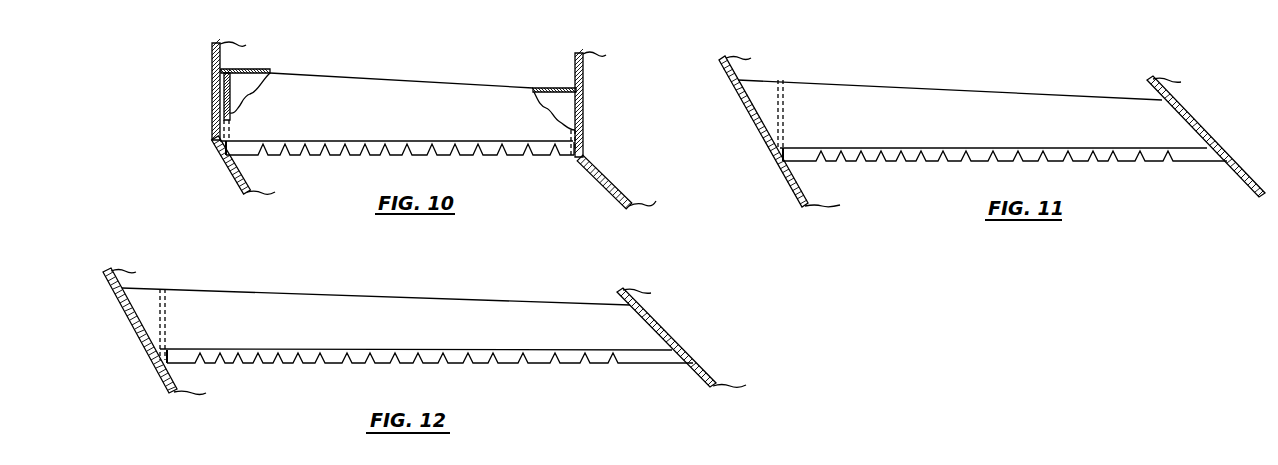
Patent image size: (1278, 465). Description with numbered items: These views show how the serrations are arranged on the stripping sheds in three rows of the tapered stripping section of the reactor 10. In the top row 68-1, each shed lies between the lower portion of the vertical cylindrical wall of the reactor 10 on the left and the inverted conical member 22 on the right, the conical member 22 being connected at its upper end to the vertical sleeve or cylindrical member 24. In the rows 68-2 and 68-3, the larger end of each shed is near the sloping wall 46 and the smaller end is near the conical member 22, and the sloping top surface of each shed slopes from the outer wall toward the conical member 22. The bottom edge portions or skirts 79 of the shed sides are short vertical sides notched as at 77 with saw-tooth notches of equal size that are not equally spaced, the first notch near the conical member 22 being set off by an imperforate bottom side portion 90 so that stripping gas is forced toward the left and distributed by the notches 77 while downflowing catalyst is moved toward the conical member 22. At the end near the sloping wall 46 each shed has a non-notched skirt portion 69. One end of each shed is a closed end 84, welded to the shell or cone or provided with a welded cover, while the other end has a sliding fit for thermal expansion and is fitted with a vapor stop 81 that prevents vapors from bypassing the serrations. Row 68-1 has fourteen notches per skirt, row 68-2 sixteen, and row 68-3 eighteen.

In FIG. 10, the reactor 10 is at (213, 100).
In FIG. 10, the inverted conical member 22 is at (610, 185).
In FIG. 11, the inverted conical member 22 is at (1200, 127).
In FIG. 12, the inverted conical member 22 is at (675, 341).
In FIG. 10, the sleeve or cylindrical member 24 is at (583, 115).
In FIG. 10, the sloping wall 46 is at (229, 168).
In FIG. 11, the sloping wall 46 is at (752, 125).
In FIG. 12, the sloping wall 46 is at (143, 338).
In FIG. 10, the top row of sheds 68-1 is at (465, 93).
In FIG. 11, the row of sheds 68-2 is at (993, 98).
In FIG. 12, the row of sheds 68-3 is at (372, 310).
In FIG. 10, the non-notched side portion 69 is at (245, 148).
In FIG. 11, the non-notched side portion 69 is at (805, 156).
In FIG. 12, the non-notched side portion 69 is at (183, 356).
In FIG. 10, the notches or serrations 77 is at (345, 149).
In FIG. 11, the notches or serrations 77 is at (942, 159).
In FIG. 12, the notches or serrations 77 is at (324, 362).
In FIG. 10, the bottom edge portions or skirts 79 is at (492, 150).
In FIG. 11, the bottom edge portions or skirts 79 is at (1125, 156).
In FIG. 12, the bottom edge portions or skirts 79 is at (513, 360).
In FIG. 10, the vapor stop 81 is at (233, 82).
In FIG. 11, the vapor stop 81 is at (784, 97).
In FIG. 12, the vapor stop 81 is at (165, 309).
In FIG. 10, the closed end or welded cover 84 is at (572, 105).
In FIG. 10, the non-notched side portion 90 is at (568, 152).
In FIG. 11, the non-notched side portion 90 is at (1202, 159).
In FIG. 12, the non-notched side portion 90 is at (658, 361).